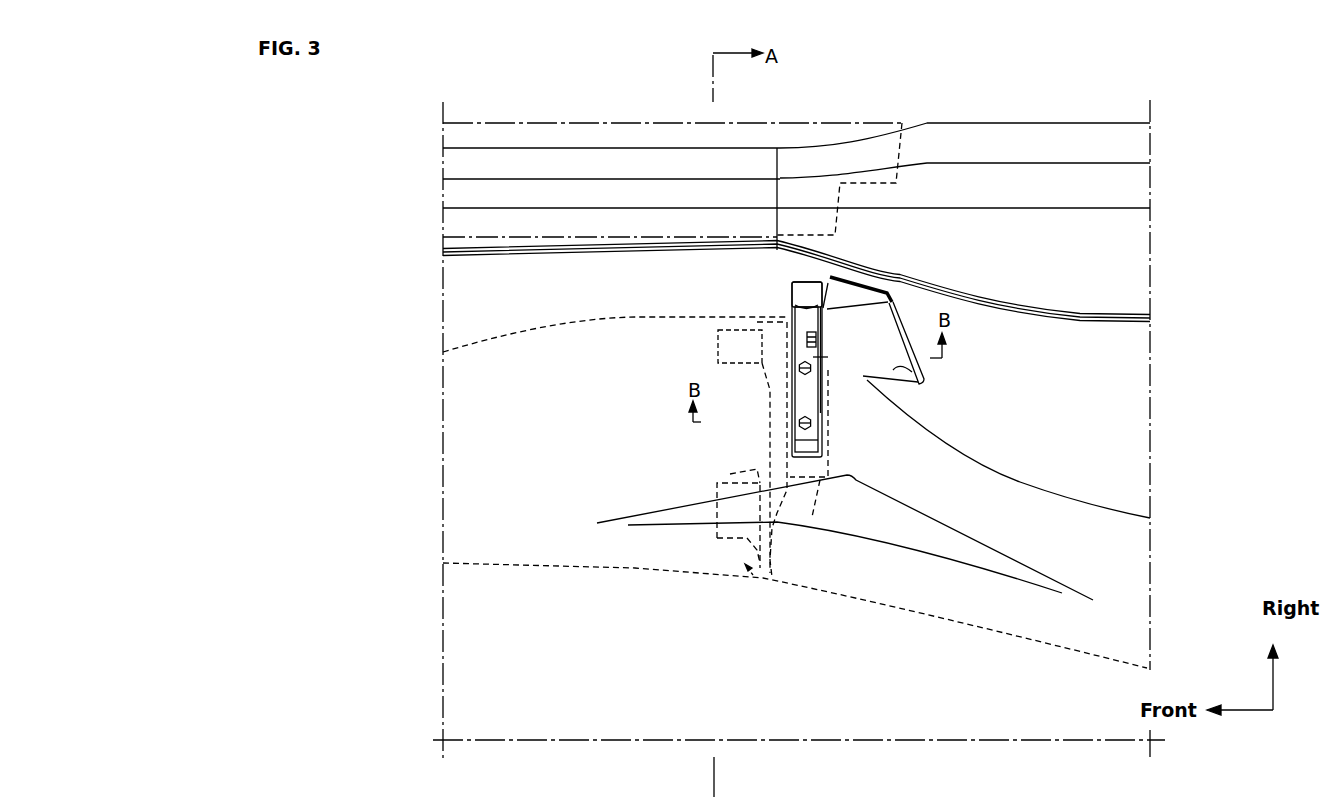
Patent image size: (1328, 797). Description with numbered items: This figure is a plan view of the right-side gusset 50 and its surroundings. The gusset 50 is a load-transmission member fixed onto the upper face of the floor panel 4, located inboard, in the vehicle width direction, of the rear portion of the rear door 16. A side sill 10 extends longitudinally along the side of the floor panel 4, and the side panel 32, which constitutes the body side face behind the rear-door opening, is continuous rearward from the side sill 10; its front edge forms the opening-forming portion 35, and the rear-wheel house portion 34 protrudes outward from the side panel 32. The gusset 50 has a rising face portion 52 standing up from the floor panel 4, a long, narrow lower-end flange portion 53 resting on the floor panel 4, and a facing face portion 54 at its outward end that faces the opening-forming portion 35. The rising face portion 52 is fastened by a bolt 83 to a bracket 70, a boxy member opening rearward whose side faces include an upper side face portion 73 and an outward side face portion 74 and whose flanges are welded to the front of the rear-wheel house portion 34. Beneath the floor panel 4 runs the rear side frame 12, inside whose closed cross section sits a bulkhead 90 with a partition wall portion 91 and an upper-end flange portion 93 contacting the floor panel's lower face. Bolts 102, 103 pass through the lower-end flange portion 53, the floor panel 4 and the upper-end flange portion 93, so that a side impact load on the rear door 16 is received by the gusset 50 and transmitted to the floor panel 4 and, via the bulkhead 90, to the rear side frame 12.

The floor panel 4 is at (612, 673).
The side sill 10 is at (537, 148).
The rear side frame 12 is at (877, 598).
The rear door 16 is at (592, 123).
The side panel 32 is at (1064, 128).
The rear-wheel house portion 34 is at (1084, 487).
The opening-forming portion 35 is at (833, 253).
The gusset 50 is at (783, 308).
The rising face portion 52 is at (822, 395).
The lower-end flange portion 53 is at (815, 448).
The facing face portion 54 is at (806, 288).
The bracket 70 is at (897, 287).
The upper side face portion 73 is at (921, 386).
The outward side face portion 74 is at (851, 292).
The bolt 83 is at (807, 342).
The bulkhead 90 is at (710, 541).
The partition wall portion 91 is at (730, 474).
The upper-end flange portion 93 is at (812, 528).
The bolt 102 is at (800, 369).
The bolt 103 is at (800, 426).